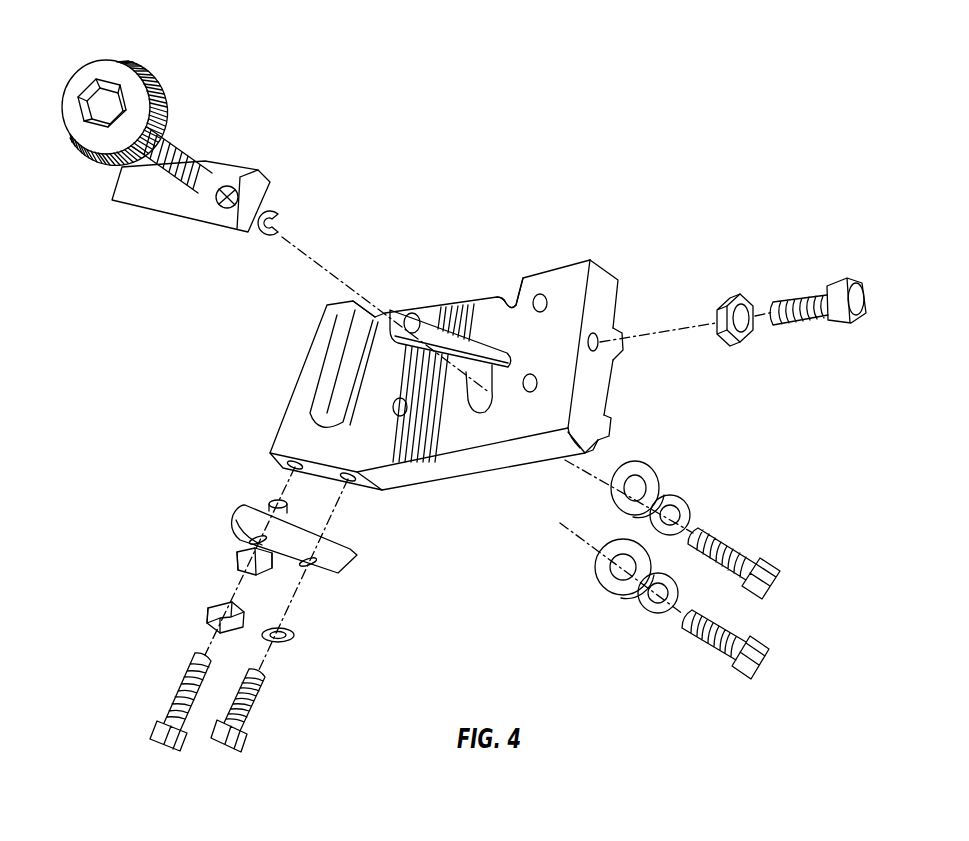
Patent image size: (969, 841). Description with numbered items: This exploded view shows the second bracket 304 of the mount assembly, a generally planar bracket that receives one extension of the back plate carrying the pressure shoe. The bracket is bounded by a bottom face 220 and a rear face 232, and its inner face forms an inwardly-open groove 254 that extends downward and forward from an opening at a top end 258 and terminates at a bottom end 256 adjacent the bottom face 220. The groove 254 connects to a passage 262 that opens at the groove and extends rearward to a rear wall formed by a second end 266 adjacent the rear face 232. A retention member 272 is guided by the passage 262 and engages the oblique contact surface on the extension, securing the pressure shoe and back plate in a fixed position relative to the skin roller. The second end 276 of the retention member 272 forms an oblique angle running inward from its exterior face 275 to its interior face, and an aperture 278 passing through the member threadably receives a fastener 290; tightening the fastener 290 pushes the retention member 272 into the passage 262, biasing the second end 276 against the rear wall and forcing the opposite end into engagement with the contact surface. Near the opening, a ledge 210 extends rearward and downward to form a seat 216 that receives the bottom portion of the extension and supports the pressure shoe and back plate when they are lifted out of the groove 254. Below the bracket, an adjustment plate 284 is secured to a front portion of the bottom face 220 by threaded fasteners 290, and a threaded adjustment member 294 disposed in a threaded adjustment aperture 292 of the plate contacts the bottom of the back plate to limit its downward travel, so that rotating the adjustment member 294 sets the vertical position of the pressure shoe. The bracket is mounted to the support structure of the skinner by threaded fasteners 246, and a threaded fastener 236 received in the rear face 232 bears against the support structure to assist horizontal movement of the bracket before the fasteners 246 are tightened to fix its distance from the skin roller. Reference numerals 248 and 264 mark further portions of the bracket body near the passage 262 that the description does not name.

The ledge 210 is at (480, 265).
The seat 216 is at (507, 298).
The bottom face 220 is at (547, 452).
The rear face 232 is at (605, 300).
The threaded fastener 236 is at (801, 290).
The threaded fasteners 246 is at (623, 346).
The curved surface 248 is at (457, 447).
The groove 254 is at (272, 352).
The bottom end 256 is at (275, 414).
The top end 258 is at (383, 310).
The passage 262 is at (428, 466).
The face 264 is at (388, 373).
The second end 266 is at (592, 291).
The retention member 272 is at (208, 222).
The exterior face 275 is at (155, 197).
The second end 276 is at (263, 192).
The aperture 278 is at (228, 192).
The adjustment plate 284 is at (346, 562).
The fastener 290 is at (98, 92).
The threaded adjustment aperture 292 is at (252, 527).
The adjustment member 294 is at (167, 752).
The second bracket 304 is at (525, 122).